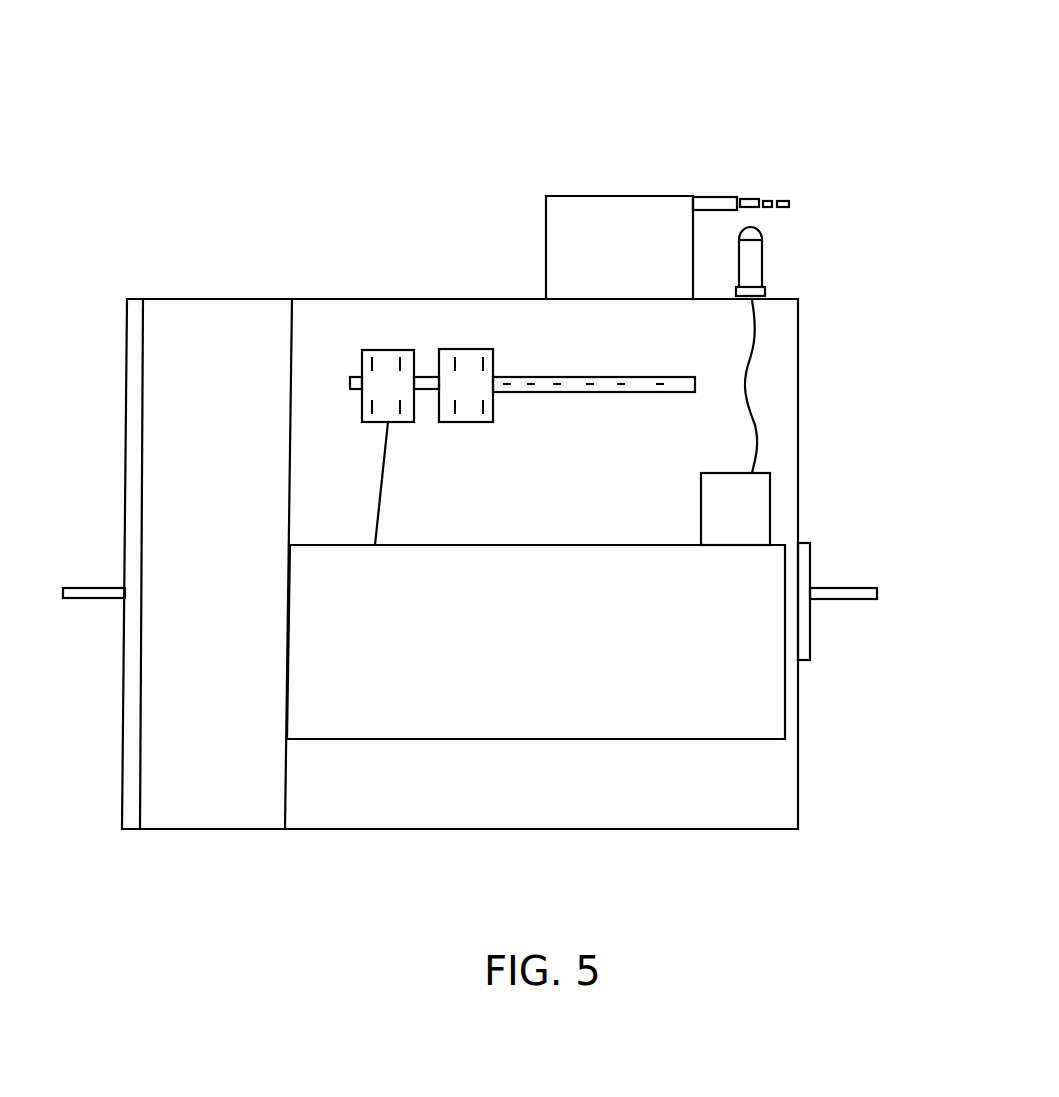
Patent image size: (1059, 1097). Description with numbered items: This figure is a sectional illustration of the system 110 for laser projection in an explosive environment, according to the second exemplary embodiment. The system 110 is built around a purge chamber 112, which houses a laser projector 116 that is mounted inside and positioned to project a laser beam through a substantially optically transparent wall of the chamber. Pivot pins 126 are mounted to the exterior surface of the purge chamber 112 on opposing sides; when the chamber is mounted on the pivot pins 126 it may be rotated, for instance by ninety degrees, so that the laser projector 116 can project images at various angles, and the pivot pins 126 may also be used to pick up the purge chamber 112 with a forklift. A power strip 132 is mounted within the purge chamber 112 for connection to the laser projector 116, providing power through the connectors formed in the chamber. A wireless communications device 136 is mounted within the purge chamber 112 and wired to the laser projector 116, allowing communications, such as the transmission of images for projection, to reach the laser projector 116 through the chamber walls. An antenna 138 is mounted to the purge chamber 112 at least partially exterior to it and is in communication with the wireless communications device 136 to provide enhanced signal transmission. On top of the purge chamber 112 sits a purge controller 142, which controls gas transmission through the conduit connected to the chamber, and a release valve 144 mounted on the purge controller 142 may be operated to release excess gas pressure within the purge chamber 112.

The system 110 is at (782, 43).
The purge chamber 112 is at (511, 793).
The laser projector 116 is at (758, 687).
The pivot pin 126 is at (63, 585).
The power strip 132 is at (387, 378).
The wireless communications device 136 is at (770, 490).
The antenna 138 is at (762, 260).
The purge controller 142 is at (588, 194).
The release valve 144 is at (813, 192).